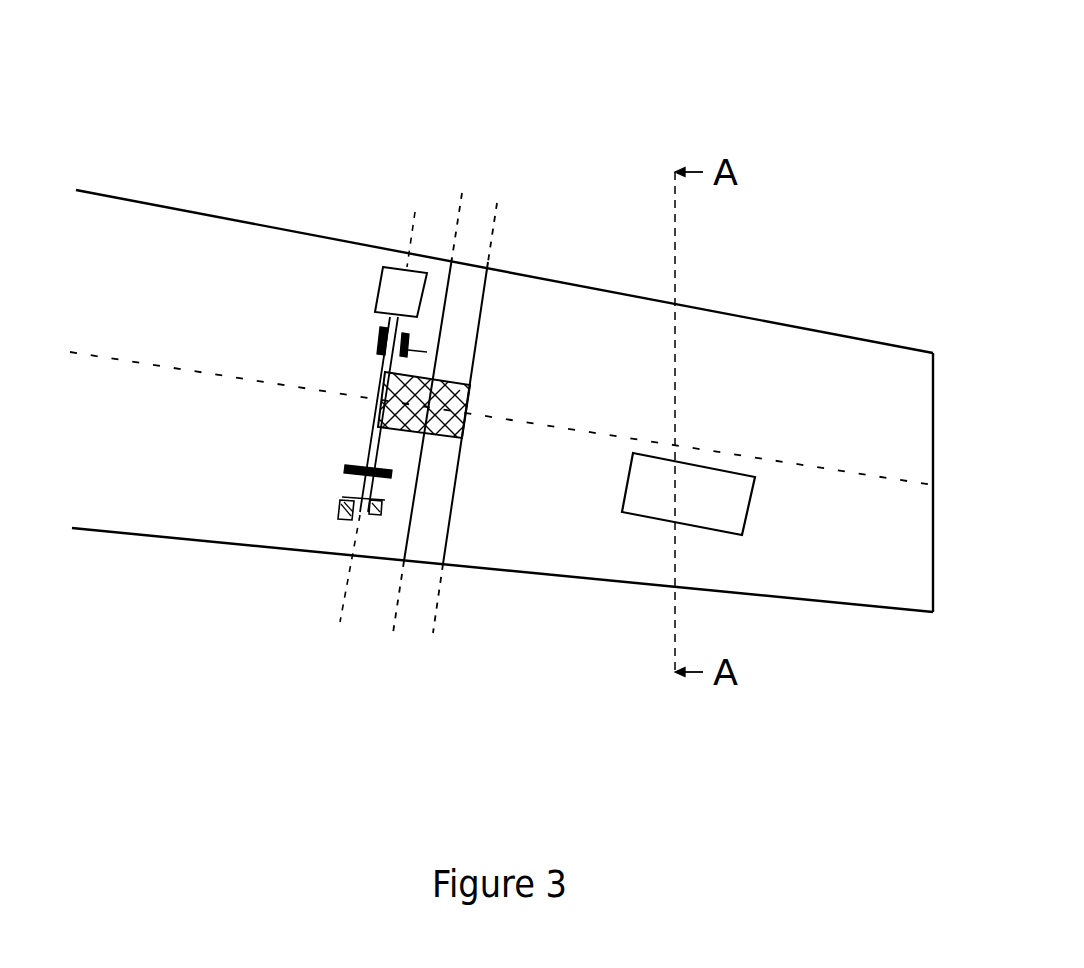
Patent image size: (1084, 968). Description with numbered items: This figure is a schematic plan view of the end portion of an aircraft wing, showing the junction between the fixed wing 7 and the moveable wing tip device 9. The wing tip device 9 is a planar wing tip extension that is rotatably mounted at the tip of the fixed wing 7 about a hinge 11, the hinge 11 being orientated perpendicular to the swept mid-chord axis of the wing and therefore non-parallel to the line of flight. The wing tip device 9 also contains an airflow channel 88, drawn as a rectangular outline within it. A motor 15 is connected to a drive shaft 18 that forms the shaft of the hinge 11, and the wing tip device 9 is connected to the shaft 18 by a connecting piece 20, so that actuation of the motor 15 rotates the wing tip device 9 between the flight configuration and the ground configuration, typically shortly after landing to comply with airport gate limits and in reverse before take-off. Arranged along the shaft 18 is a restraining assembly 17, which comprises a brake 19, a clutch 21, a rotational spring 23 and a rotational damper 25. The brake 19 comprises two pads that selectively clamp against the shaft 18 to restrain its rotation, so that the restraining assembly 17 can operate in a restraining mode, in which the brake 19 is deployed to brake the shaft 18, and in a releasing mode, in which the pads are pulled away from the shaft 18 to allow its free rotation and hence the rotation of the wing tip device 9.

The restraining assembly 17 is at (272, 187).
The fixed wing 7 is at (87, 434).
The wing tip device 9 is at (807, 415).
The motor 15 is at (400, 283).
The drive shaft 18 is at (370, 443).
The brake 19 is at (378, 339).
The connecting piece 20 is at (463, 388).
The clutch 21 is at (345, 469).
The rotational spring 23 is at (377, 513).
The rotational damper 25 is at (345, 514).
The hinge 11 is at (345, 597).
The airflow channel 88 is at (748, 529).